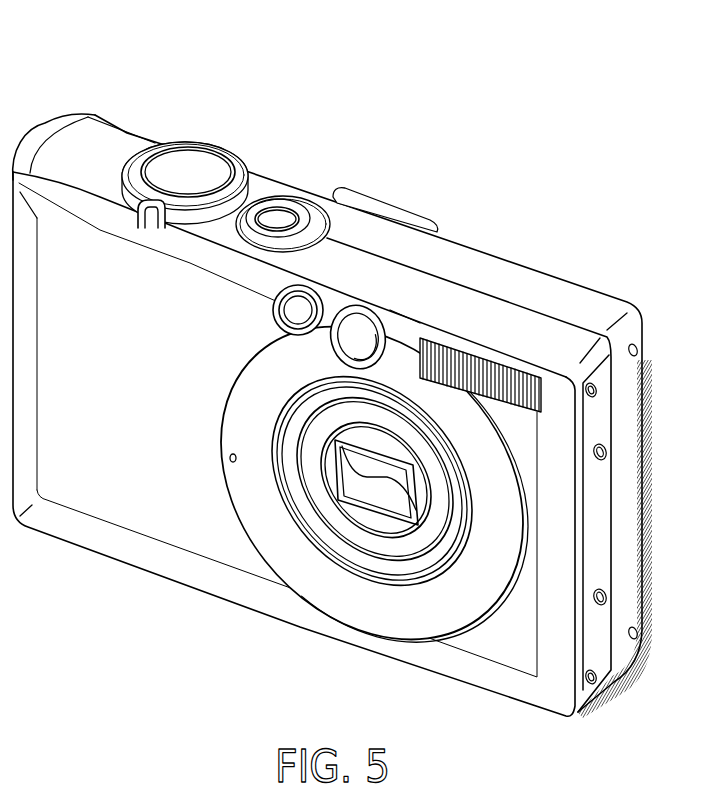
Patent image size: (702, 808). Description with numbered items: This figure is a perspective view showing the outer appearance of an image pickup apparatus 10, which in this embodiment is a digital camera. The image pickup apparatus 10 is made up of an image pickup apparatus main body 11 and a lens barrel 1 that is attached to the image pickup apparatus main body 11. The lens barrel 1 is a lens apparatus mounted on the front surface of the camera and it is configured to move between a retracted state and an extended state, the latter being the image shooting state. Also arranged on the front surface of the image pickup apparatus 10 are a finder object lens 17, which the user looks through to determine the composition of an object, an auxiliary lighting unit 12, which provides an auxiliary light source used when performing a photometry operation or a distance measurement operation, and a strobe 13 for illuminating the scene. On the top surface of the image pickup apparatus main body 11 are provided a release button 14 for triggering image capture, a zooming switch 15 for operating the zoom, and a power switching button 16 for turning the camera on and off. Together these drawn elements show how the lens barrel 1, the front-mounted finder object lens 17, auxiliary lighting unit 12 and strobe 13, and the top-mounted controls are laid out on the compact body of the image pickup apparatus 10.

The image pickup apparatus 10 is at (493, 107).
The image pickup apparatus main body 11 is at (153, 530).
The lens barrel 1 is at (378, 547).
The auxiliary lighting unit 12 is at (302, 292).
The strobe 13 is at (480, 365).
The release button 14 is at (193, 160).
The zooming switch 15 is at (240, 180).
The power switching button 16 is at (277, 216).
The finder object lens 17 is at (358, 328).